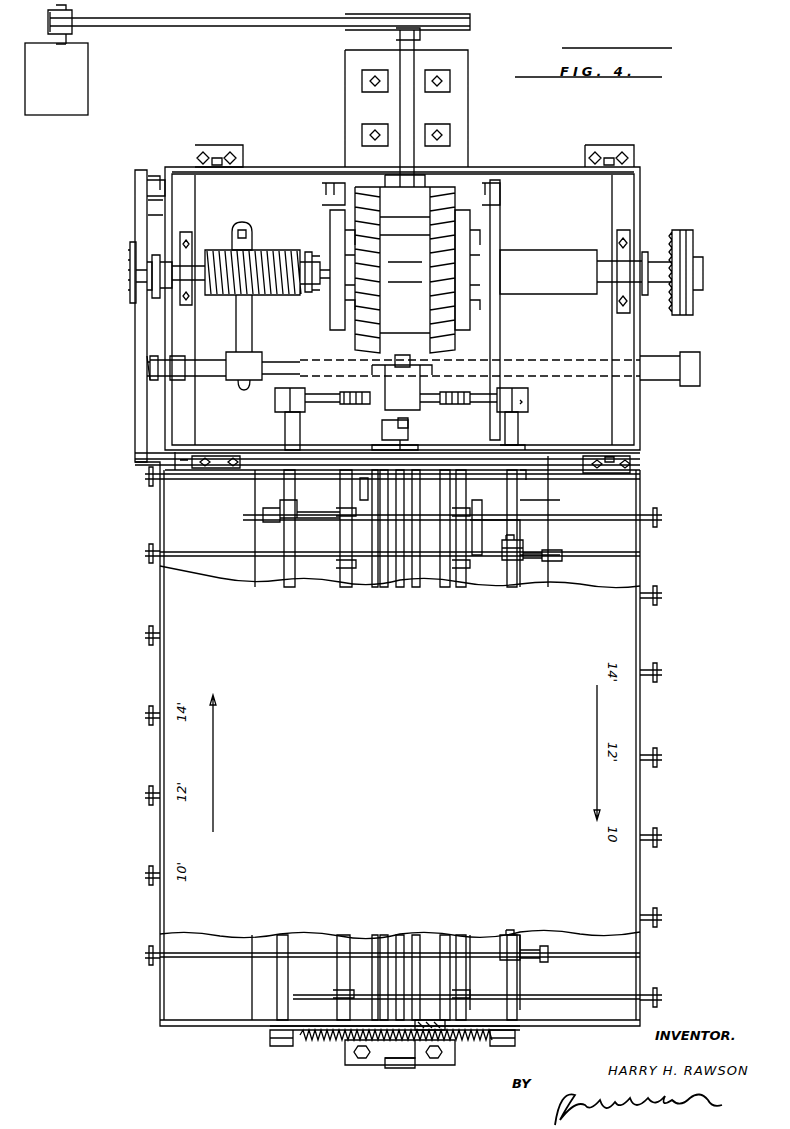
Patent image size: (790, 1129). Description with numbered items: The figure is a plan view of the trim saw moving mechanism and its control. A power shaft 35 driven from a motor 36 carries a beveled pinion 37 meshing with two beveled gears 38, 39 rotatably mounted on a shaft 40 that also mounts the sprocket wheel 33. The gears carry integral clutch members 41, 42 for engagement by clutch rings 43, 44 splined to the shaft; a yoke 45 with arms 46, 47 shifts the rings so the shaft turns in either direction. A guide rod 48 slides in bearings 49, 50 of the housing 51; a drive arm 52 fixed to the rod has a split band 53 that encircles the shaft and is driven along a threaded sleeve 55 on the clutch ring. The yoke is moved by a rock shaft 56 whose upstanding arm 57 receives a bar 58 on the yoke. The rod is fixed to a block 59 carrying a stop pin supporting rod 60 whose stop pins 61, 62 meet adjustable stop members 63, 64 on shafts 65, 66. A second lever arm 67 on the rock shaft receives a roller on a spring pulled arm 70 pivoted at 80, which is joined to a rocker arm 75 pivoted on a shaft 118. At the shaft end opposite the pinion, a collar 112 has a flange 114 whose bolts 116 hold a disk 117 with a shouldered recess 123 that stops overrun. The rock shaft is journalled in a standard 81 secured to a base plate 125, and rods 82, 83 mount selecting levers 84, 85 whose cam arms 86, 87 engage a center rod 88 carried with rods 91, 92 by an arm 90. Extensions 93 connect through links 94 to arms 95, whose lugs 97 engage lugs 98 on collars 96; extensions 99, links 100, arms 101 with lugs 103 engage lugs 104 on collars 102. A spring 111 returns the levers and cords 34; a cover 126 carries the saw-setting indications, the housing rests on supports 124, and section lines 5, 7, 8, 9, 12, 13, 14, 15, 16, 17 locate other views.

The motor 36 is at (70, 92).
The power shaft 35 is at (345, 106).
The beveled gear 38 is at (392, 178).
The beveled pinion 37 is at (420, 180).
The beveled gear 39 is at (456, 193).
The supports 124 is at (606, 476).
The shaft 118 is at (156, 184).
The section line 17 is at (118, 458).
The housing 51 is at (163, 210).
The bolts 116 is at (500, 250).
The flange 114 is at (152, 255).
The shouldered recess 123 is at (132, 278).
The disk 117 is at (320, 314).
The collar 112 is at (156, 298).
The clutch ring 43 is at (322, 245).
The clutch member 41 is at (335, 238).
The threaded sleeve 55 is at (222, 250).
The split band 53 is at (252, 250).
The section line 14 is at (232, 410).
The section line 15 is at (333, 328).
The clutch member 42 is at (474, 240).
The clutch ring 44 is at (500, 252).
The sprocket wheel 33 is at (700, 300).
The shaft 40 is at (398, 262).
The yoke 45 is at (376, 360).
The yoke arm 46 is at (310, 326).
The drive arm 52 is at (236, 320).
The guide rod 48 is at (208, 362).
The bearing 49 is at (152, 370).
The yoke arm 47 is at (502, 330).
The bearing 50 is at (704, 378).
The stop pin supporting rod 60 is at (386, 380).
The bar 58 is at (410, 425).
The block 59 is at (405, 396).
The section line 13 is at (444, 580).
The section line 5 is at (521, 372).
The adjustable stop member 63 is at (532, 398).
The stop pin 61 is at (520, 412).
The shaft 65 is at (520, 990).
The adjustable stop member 64 is at (286, 398).
The stop pin 62 is at (344, 404).
The rock shaft 56 is at (420, 1060).
The upstanding arm 57 is at (372, 445).
The section line 9 is at (573, 470).
The shaft 66 is at (277, 978).
The rocker arm 75 is at (135, 405).
The spring pulled arm 70 is at (150, 464).
The cords 34 is at (662, 596).
The pivot 80 is at (531, 481).
The arms 101 is at (263, 514).
The lugs 104 is at (282, 505).
The lugs 103 is at (298, 506).
The extensions 99 is at (301, 516).
The links 100 is at (263, 521).
The collars 102 is at (292, 522).
The lever arm 67 is at (362, 490).
The selecting levers 84 is at (345, 960).
The selecting levers 85 is at (602, 985).
The cam arm 87 is at (452, 1030).
The collars 96 is at (500, 942).
The lug 97 is at (515, 945).
The lug 98 is at (525, 952).
The links 94 is at (520, 985).
The arms 95 is at (545, 962).
The section line 7 is at (577, 565).
The section line 16 is at (401, 620).
The rod 83 is at (337, 980).
The cam arm 86 is at (375, 945).
The center rod 88 is at (400, 940).
The rod 92 is at (430, 935).
The rod 82 is at (462, 984).
The extension 93 is at (480, 945).
The section line 12 is at (577, 1045).
The section line 8 is at (610, 909).
The cover 126 is at (640, 860).
The rod 91 is at (378, 950).
The spring 111 is at (320, 1040).
The arm 90 is at (396, 1068).
The standard 81 is at (492, 1046).
The base plate 125 is at (538, 1010).